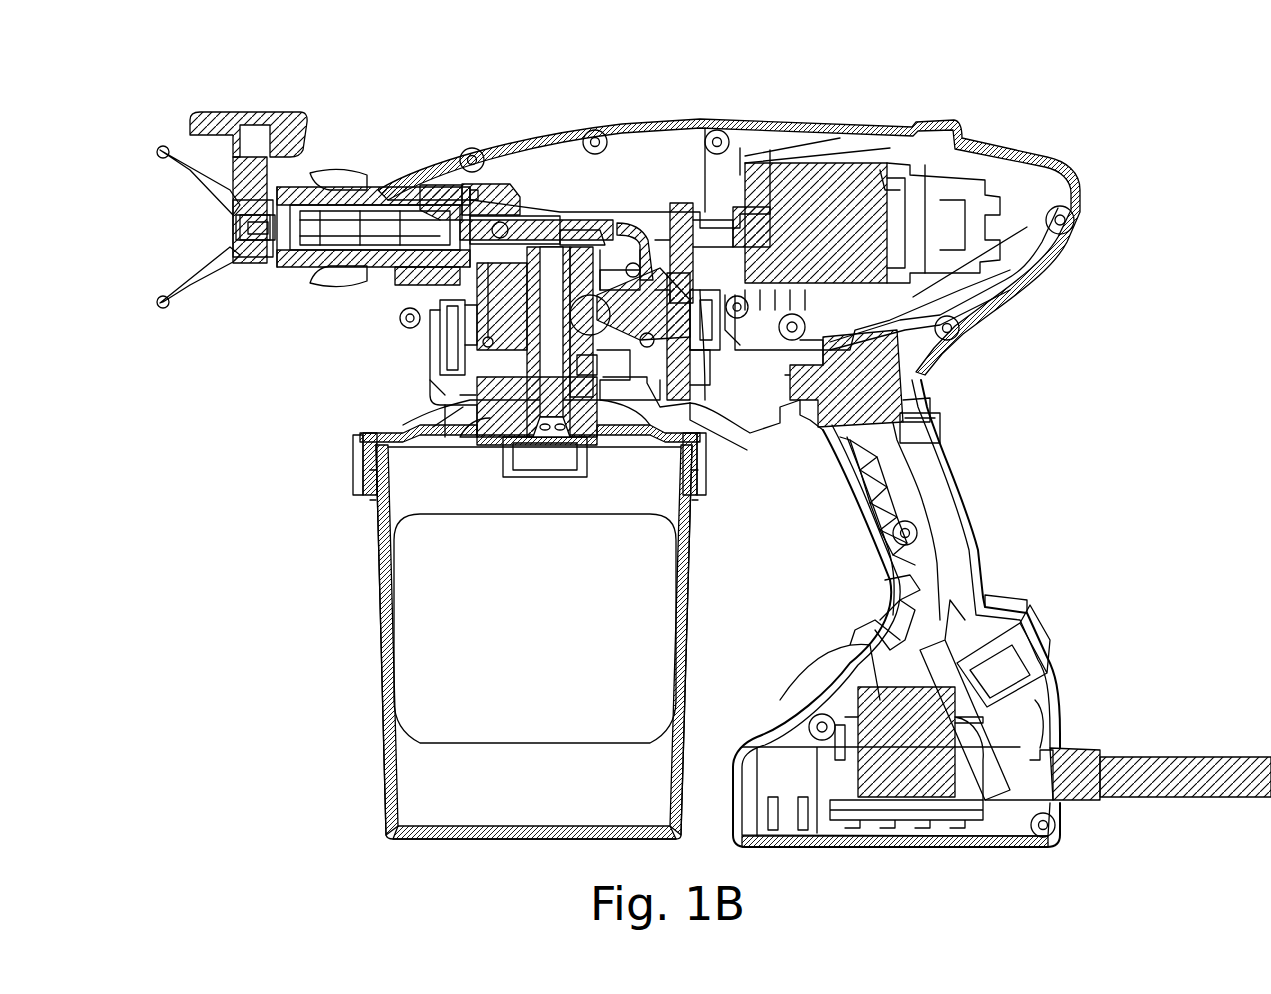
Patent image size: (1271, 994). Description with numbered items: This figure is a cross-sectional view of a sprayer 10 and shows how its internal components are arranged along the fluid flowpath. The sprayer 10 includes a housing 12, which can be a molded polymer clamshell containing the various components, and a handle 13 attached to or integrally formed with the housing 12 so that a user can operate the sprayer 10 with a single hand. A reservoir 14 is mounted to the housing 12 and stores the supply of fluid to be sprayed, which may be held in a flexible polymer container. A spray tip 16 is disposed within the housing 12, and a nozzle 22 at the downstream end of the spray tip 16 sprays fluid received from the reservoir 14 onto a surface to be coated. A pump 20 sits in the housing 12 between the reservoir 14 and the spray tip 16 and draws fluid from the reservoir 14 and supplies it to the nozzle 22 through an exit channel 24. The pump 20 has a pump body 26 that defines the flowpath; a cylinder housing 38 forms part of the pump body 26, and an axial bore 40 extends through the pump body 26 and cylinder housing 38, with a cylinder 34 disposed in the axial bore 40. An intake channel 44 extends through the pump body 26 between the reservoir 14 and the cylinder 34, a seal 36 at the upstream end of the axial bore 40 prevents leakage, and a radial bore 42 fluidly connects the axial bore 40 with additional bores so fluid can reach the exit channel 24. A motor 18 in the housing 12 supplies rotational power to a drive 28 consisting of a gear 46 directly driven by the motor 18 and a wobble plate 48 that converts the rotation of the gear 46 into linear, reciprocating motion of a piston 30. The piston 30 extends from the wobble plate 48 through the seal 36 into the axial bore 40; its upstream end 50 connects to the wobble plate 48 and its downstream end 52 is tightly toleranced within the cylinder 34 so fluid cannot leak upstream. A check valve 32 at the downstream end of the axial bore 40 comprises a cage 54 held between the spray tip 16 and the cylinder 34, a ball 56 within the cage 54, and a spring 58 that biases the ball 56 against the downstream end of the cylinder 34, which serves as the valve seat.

The sprayer 10 is at (1106, 115).
The housing 12 is at (731, 138).
The handle 13 is at (972, 487).
The reservoir 14 is at (706, 511).
The spray tip 16 is at (312, 180).
The motor 18 is at (840, 183).
The pump 20 is at (612, 218).
The nozzle 22 is at (232, 222).
The exit channel 24 is at (402, 222).
The pump body 26 is at (434, 185).
The drive 28 is at (655, 398).
The piston 30 is at (540, 225).
The check valve 32 is at (392, 274).
The cylinder 34 is at (522, 220).
The seal 36 is at (592, 212).
The cylinder housing 38 is at (500, 185).
The axial bore 40 is at (556, 222).
The radial bore 42 is at (490, 315).
The intake channel 44 is at (465, 399).
The gear 46 is at (662, 240).
The wobble plate 48 is at (690, 322).
The upstream end 50 is at (633, 240).
The downstream end 52 is at (512, 250).
The cage 54 is at (448, 182).
The ball 56 is at (372, 283).
The spring 58 is at (493, 342).